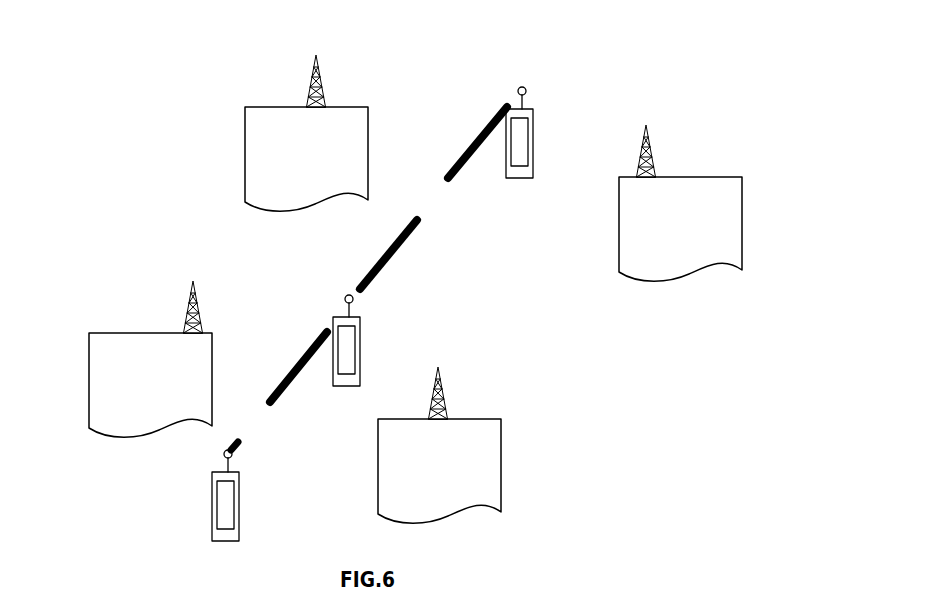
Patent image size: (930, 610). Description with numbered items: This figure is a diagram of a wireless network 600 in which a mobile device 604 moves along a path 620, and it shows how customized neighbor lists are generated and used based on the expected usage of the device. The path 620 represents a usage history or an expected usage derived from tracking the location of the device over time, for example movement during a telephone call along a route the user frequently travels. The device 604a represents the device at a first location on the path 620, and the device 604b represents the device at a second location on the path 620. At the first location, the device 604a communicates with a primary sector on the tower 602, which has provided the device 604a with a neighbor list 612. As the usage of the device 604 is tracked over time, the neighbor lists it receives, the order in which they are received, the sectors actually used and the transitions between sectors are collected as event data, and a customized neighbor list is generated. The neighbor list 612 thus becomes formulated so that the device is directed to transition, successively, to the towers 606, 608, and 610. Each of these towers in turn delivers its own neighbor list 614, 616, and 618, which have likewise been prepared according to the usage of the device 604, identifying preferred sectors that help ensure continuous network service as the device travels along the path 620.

The wireless network 600 is at (356, 30).
The tower 602 is at (193, 282).
The device 604 is at (352, 302).
The device at first location 604a is at (231, 457).
The device at second location 604b is at (525, 88).
The tower 606 is at (438, 367).
The tower 608 is at (315, 56).
The tower 610 is at (646, 125).
The neighbor list 612 is at (137, 333).
The neighbor list 614 is at (501, 467).
The neighbor list 616 is at (245, 158).
The neighbor list 618 is at (742, 225).
The path 620 is at (478, 130).